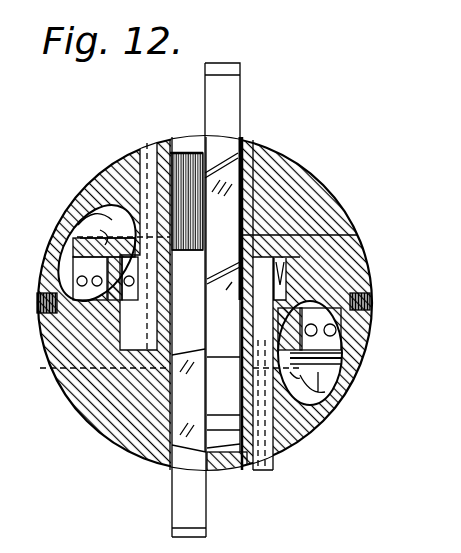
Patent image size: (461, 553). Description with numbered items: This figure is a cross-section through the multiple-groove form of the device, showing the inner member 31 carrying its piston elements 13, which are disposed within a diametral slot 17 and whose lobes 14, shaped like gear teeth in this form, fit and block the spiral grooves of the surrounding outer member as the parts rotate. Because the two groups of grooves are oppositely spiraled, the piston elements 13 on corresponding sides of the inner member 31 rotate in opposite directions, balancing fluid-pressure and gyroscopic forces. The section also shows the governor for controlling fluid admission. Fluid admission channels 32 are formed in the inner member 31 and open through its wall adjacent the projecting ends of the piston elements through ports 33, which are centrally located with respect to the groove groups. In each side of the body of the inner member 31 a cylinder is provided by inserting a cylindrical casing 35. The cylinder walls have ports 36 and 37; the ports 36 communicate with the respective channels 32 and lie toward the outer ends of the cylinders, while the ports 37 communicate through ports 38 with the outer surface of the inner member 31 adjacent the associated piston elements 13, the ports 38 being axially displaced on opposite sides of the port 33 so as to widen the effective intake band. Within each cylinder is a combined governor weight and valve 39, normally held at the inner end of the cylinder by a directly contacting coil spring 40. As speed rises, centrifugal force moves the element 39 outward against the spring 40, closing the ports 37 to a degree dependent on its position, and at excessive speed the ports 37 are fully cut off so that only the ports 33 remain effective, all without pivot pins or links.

The piston element 13 is at (214, 228).
The lobe 14 is at (228, 107).
The diametral slot 17 is at (240, 415).
The inner member 31 is at (110, 432).
The fluid admission channel 32 is at (72, 197).
The port 33 is at (121, 163).
The cylindrical casing 35 is at (62, 224).
The port 36 is at (110, 262).
The port 37 is at (140, 277).
The port 38 is at (146, 152).
The combined governor weight and valve 39 is at (67, 256).
The coil spring 40 is at (68, 354).